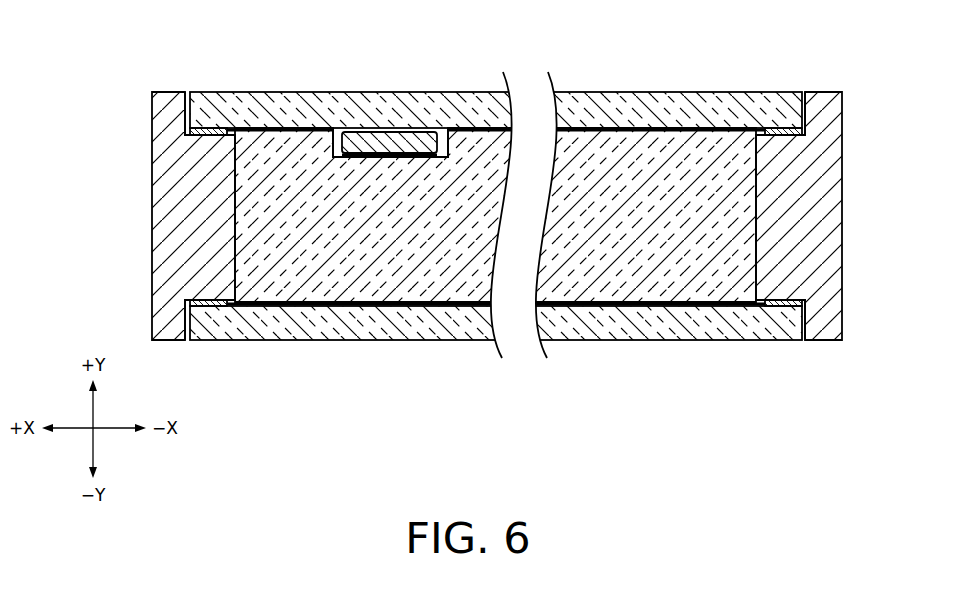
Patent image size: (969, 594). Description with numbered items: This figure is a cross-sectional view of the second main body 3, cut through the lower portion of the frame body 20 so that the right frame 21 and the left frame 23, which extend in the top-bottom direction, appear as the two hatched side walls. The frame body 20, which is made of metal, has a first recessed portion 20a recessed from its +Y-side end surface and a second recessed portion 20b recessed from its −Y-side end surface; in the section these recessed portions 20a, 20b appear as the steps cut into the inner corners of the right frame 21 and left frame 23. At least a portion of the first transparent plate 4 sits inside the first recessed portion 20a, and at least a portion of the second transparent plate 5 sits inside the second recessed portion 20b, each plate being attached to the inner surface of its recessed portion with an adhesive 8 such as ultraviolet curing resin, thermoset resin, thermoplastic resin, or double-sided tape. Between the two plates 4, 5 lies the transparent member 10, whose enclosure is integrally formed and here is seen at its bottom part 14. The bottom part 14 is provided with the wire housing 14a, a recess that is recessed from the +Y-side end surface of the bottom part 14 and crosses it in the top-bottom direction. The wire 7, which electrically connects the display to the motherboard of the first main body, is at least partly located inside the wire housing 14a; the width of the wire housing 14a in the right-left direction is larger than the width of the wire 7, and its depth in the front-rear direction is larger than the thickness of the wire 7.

The second main body 3 is at (487, 206).
The first transparent plate 4 is at (640, 330).
The second transparent plate 5 is at (668, 108).
The wire 7 is at (405, 142).
The adhesive 8 is at (215, 130).
The transparent member 10 is at (394, 312).
The bottom part 14 is at (495, 226).
The wire housing 14a is at (338, 140).
The frame body 20 is at (497, 200).
The first recessed portion 20a is at (200, 128).
The second recessed portion 20b is at (190, 330).
The right frame 21 is at (825, 212).
The left frame 23 is at (163, 240).